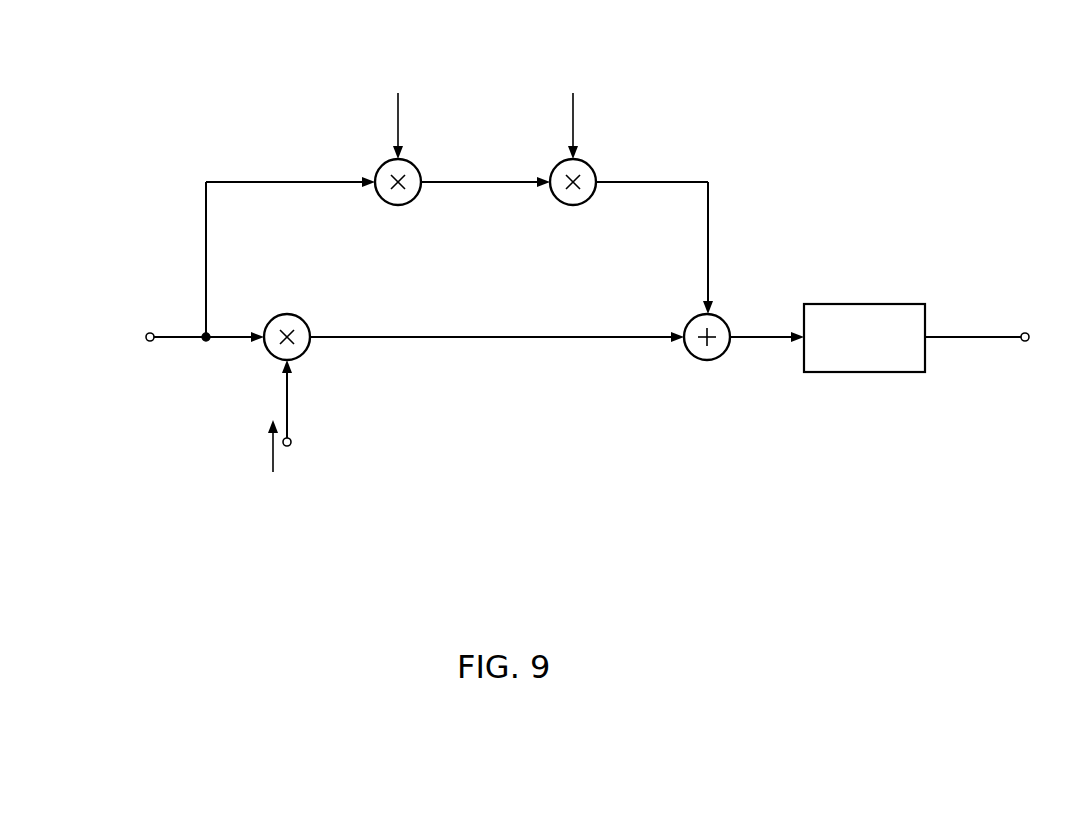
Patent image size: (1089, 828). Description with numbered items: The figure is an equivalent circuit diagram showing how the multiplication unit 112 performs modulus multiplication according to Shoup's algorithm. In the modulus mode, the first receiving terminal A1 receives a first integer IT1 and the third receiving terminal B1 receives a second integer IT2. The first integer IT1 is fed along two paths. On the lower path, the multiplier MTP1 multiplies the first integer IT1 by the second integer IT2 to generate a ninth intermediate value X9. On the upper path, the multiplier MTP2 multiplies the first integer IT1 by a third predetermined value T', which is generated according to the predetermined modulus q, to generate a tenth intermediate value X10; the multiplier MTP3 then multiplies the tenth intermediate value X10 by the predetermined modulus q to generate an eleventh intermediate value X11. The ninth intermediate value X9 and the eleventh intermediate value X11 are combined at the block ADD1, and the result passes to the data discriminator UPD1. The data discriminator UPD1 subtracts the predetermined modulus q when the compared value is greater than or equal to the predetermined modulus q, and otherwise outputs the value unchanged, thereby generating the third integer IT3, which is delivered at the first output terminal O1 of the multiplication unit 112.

The multiplication unit 112 is at (589, 286).
The first integer IT1 is at (168, 312).
The second integer IT2 is at (279, 465).
The third integer IT3 is at (1031, 359).
The first receiving terminal A1 is at (147, 342).
The third receiving terminal B1 is at (291, 440).
The first output terminal O1 is at (1028, 333).
The multiplier MTP1 is at (293, 314).
The multiplier MTP2 is at (587, 202).
The multiplier MTP3 is at (410, 202).
The adder ADD1 is at (708, 362).
The data discriminator UPD1 is at (827, 338).
The ninth intermediate value X9 is at (497, 357).
The tenth intermediate value X10 is at (485, 163).
The eleventh intermediate value X11 is at (654, 226).
The third predetermined value T' is at (400, 111).
The predetermined modulus q is at (573, 110).